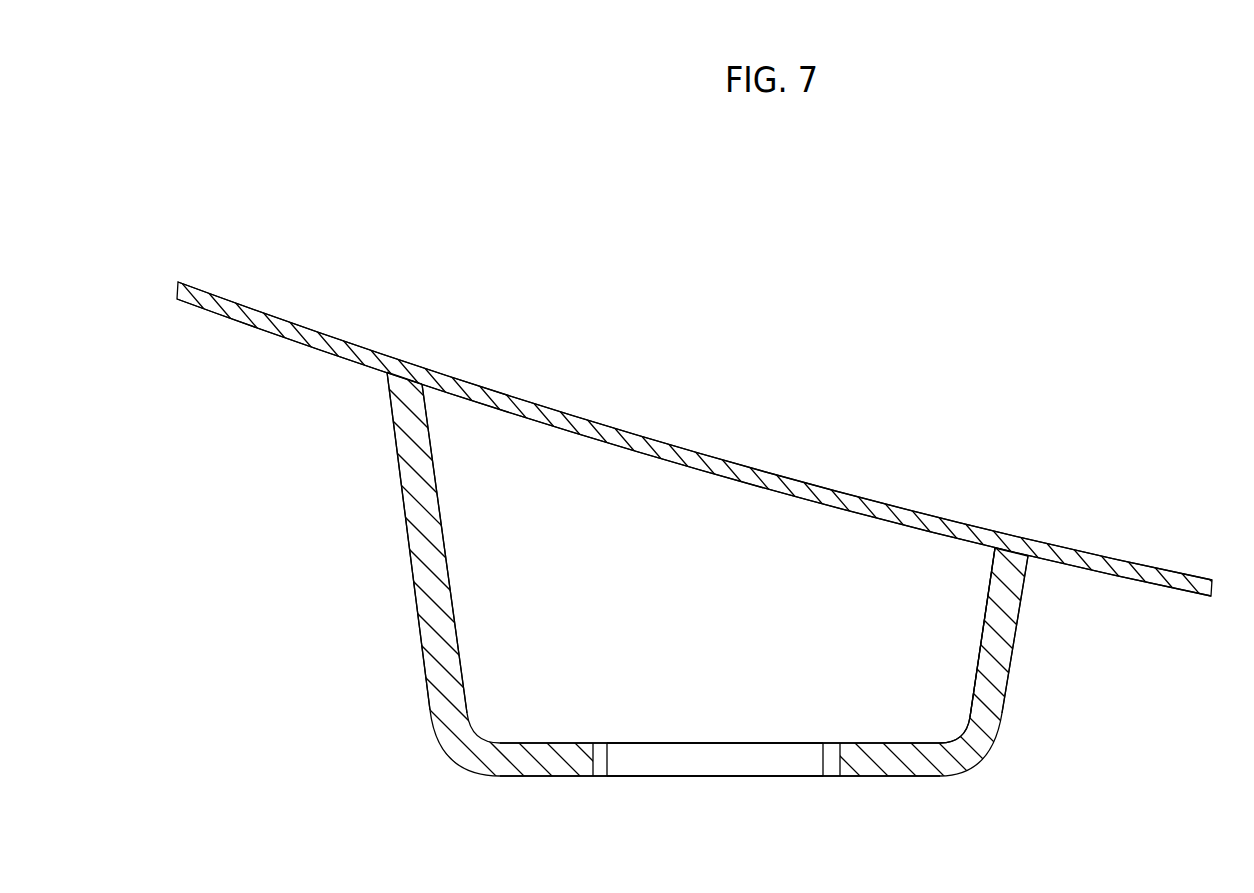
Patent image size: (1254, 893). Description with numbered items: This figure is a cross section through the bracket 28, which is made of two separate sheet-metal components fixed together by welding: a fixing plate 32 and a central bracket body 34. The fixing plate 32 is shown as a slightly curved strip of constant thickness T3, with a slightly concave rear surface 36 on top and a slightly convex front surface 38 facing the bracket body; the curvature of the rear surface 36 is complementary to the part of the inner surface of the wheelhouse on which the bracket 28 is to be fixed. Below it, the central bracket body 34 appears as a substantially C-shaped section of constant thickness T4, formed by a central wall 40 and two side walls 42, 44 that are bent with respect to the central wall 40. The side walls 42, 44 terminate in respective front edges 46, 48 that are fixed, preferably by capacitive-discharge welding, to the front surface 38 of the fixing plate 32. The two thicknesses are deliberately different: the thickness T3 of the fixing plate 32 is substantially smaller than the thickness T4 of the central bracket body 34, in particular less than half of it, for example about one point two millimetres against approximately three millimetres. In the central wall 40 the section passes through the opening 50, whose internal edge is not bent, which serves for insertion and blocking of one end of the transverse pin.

The bracket 28 is at (1101, 763).
The fixing plate 32 is at (745, 460).
The central bracket body 34 is at (1021, 647).
The rear surface 36 is at (885, 503).
The front surface 38 is at (565, 433).
The central wall 40 is at (550, 753).
The side wall 42 is at (437, 648).
The side wall 44 is at (987, 688).
The front edge 46 is at (405, 368).
The front edge 48 is at (1015, 545).
The opening 50 is at (608, 753).
The thickness of the fixing plate T3 is at (277, 402).
The thickness of the central bracket body T4 is at (518, 536).